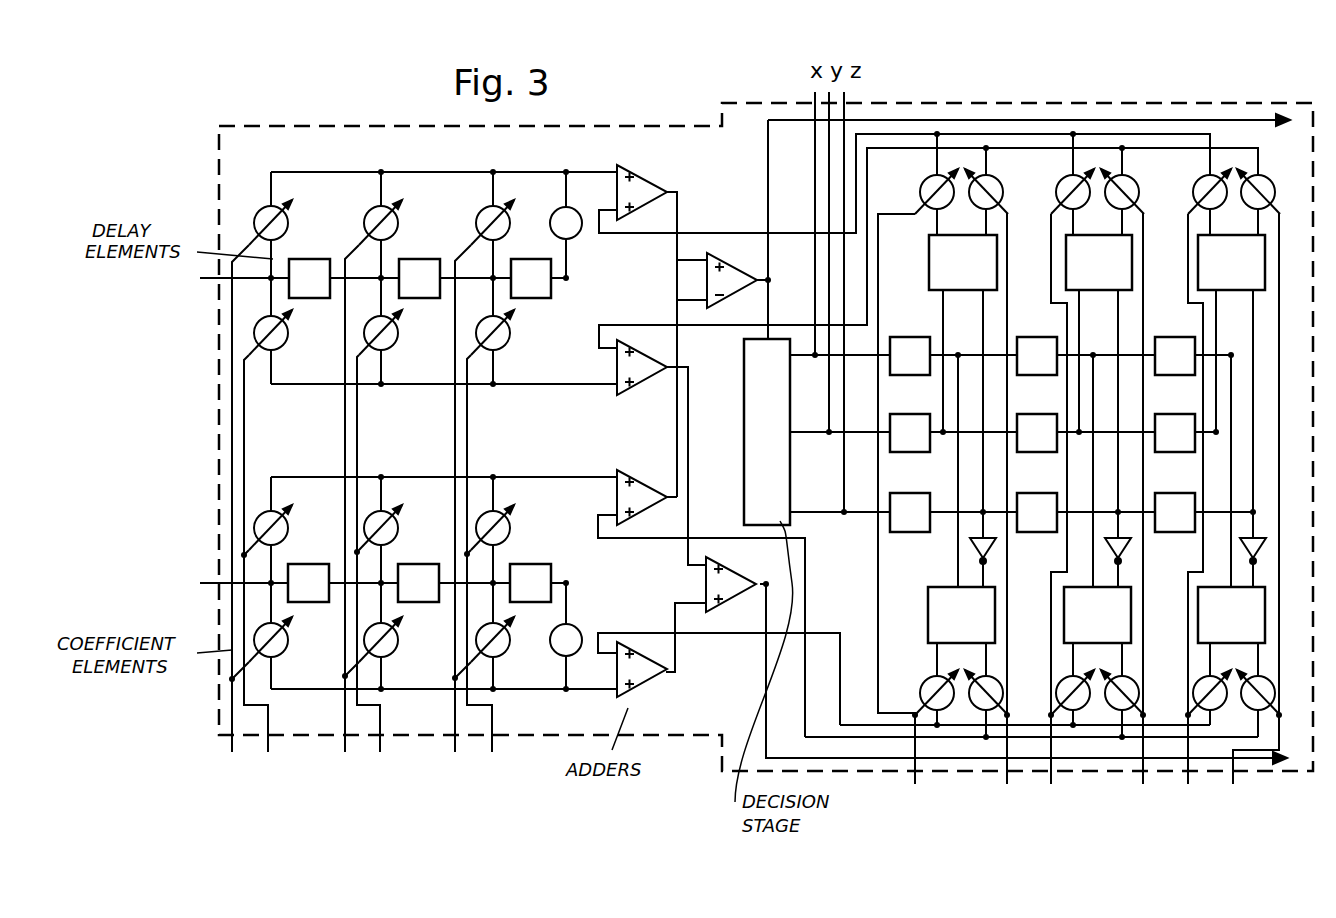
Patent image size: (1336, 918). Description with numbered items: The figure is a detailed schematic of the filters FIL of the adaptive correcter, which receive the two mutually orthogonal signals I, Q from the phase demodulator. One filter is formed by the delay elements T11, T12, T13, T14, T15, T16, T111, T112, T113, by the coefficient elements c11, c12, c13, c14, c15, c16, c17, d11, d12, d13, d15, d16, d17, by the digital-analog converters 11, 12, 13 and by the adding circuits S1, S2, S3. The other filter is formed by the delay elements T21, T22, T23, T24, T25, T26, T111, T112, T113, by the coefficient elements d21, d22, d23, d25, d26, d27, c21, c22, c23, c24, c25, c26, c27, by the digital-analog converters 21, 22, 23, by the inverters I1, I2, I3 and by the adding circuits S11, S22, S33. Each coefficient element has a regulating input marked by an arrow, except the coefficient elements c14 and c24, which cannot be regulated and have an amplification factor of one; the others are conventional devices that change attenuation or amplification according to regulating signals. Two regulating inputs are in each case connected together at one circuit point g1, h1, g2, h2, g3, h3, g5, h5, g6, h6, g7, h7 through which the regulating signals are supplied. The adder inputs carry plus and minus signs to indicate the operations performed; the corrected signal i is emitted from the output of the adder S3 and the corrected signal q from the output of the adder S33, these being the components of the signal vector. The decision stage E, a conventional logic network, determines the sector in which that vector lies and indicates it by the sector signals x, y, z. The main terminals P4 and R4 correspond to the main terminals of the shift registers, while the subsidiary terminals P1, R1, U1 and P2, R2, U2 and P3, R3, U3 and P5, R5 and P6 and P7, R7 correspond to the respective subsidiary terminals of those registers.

The filters FIL is at (1026, 103).
The demodulated signal I is at (208, 280).
The demodulated signal Q is at (206, 586).
The coefficient element c17 is at (264, 207).
The coefficient element c16 is at (365, 222).
The coefficient element c15 is at (477, 222).
The coefficient element c14 is at (559, 213).
The coefficient element d17 is at (290, 333).
The coefficient element d16 is at (401, 333).
The coefficient element d15 is at (513, 333).
The delay element T16 is at (309, 278).
The delay element T15 is at (419, 278).
The delay element T14 is at (531, 278).
The subsidiary terminal P7 is at (256, 292).
The subsidiary terminal P6 is at (368, 292).
The subsidiary terminal P5 is at (480, 292).
The main terminal P4 is at (581, 292).
The coefficient element d27 is at (290, 527).
The coefficient element d26 is at (401, 527).
The coefficient element d25 is at (513, 527).
The coefficient element c27 is at (289, 639).
The coefficient element c26 is at (400, 639).
The coefficient element c25 is at (512, 639).
The coefficient element c24 is at (573, 628).
The delay element T26 is at (308, 583).
The delay element T25 is at (418, 583).
The delay element T24 is at (530, 583).
The subsidiary terminal R7 is at (259, 571).
The subsidiary terminal R5 is at (483, 571).
The main terminal R4 is at (478, 571).
The adding circuit S1 is at (637, 177).
The adding circuit S2 is at (637, 352).
The adding circuit S3 is at (722, 259).
The adding circuit S11 is at (634, 478).
The adding circuit S22 is at (637, 694).
The adding circuit S33 is at (722, 609).
The decision stage E is at (767, 432).
The corrected signal i is at (1034, 201).
The corrected signal q is at (1036, 672).
The sector signal x is at (807, 345).
The sector signal y is at (814, 422).
The sector signal z is at (821, 502).
The circuit point g7 is at (233, 761).
The circuit point h7 is at (273, 761).
The circuit point g6 is at (347, 761).
The circuit point h6 is at (387, 761).
The circuit point g5 is at (456, 761).
The circuit point h5 is at (498, 761).
The coefficient element c13 is at (918, 191).
The coefficient element d13 is at (994, 182).
The coefficient element c12 is at (1056, 191).
The coefficient element d12 is at (1129, 182).
The coefficient element c11 is at (1193, 191).
The coefficient element d11 is at (1265, 182).
The digital-analog converter 13 is at (963, 262).
The digital-analog converter 12 is at (1099, 262).
The digital-analog converter 11 is at (1231, 262).
The digital-analog converter 23 is at (961, 615).
The digital-analog converter 22 is at (1097, 615).
The digital-analog converter 21 is at (1231, 615).
The delay element T23 is at (910, 356).
The delay element T22 is at (1037, 356).
The delay element T21 is at (1175, 356).
The delay element T13 is at (910, 433).
The delay element T12 is at (1037, 433).
The delay element T11 is at (1175, 433).
The delay element T113 is at (908, 499).
The delay element T112 is at (1036, 499).
The delay element T111 is at (1175, 499).
The subsidiary terminal P3 is at (961, 342).
The subsidiary terminal P2 is at (1096, 342).
The subsidiary terminal P1 is at (1234, 342).
The subsidiary terminal R3 is at (944, 445).
The subsidiary terminal R2 is at (1080, 445).
The subsidiary terminal R1 is at (1217, 445).
The subsidiary terminal U3 is at (997, 499).
The subsidiary terminal U2 is at (1132, 499).
The subsidiary terminal U1 is at (1267, 499).
The inverter I3 is at (969, 548).
The inverter I2 is at (1131, 548).
The inverter I1 is at (1266, 548).
The coefficient element c23 is at (919, 692).
The coefficient element d23 is at (996, 678).
The coefficient element c22 is at (1054, 692).
The coefficient element d22 is at (1133, 678).
The coefficient element c21 is at (1190, 692).
The coefficient element d21 is at (1250, 672).
The circuit point g3 is at (917, 795).
The circuit point h3 is at (1010, 795).
The circuit point g2 is at (1052, 795).
The circuit point h2 is at (1145, 795).
The circuit point g1 is at (1189, 795).
The circuit point h1 is at (1235, 795).